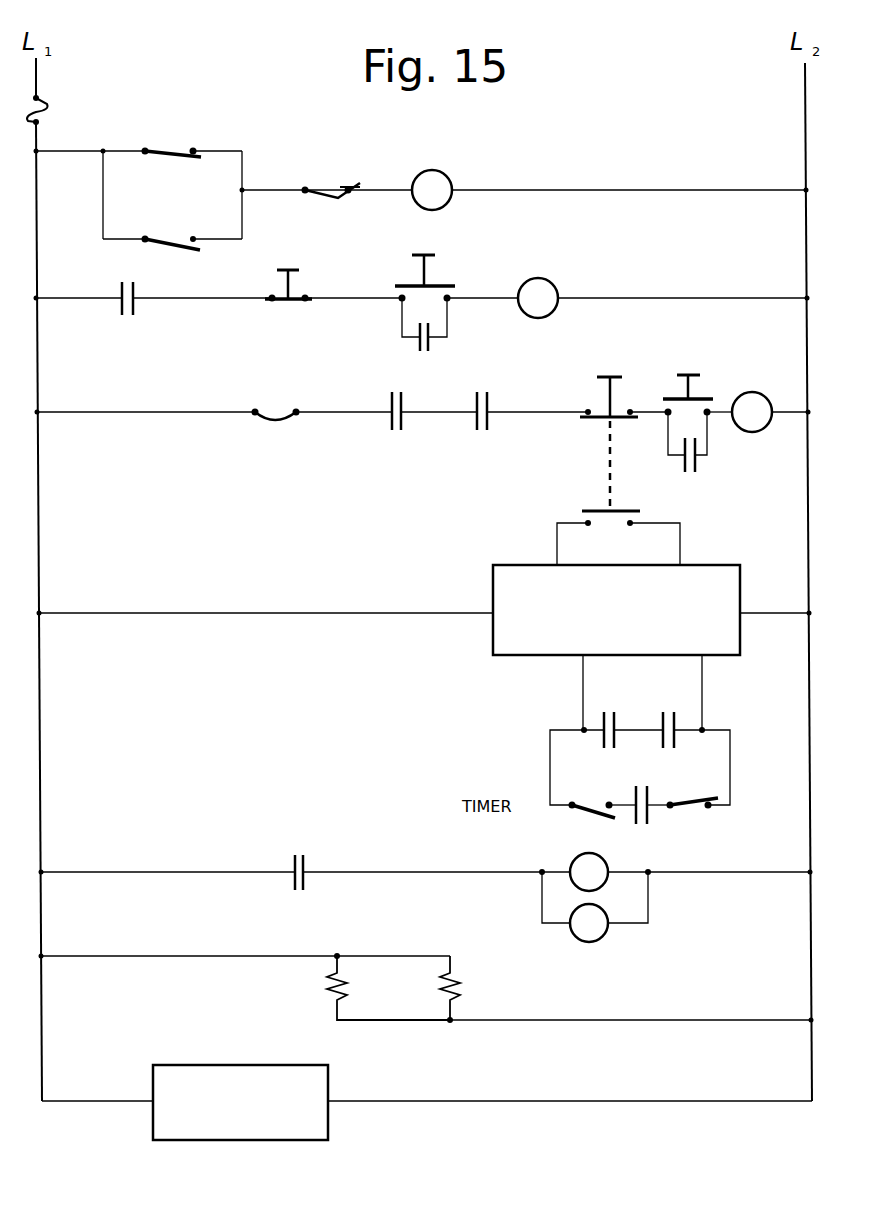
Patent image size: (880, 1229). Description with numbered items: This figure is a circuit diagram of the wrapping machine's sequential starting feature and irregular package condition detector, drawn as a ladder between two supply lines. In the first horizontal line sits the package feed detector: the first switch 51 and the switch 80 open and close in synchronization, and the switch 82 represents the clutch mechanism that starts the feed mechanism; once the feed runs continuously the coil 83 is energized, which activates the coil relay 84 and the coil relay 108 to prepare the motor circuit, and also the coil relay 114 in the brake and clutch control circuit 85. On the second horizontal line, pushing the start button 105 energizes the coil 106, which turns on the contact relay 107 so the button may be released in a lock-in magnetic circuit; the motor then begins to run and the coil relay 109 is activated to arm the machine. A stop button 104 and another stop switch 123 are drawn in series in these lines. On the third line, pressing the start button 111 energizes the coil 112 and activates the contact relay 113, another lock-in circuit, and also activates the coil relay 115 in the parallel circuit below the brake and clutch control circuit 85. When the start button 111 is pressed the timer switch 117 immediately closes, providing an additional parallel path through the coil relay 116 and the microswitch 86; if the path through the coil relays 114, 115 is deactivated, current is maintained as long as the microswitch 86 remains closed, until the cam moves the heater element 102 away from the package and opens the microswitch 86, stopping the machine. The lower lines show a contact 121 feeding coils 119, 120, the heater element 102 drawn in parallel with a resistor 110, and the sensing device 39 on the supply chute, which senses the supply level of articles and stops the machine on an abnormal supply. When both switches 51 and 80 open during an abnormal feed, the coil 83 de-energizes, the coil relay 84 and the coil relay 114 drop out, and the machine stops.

The stop switch 123 is at (48, 104).
The first switch 51 is at (172, 148).
The switch 80 is at (166, 237).
The switch 82 is at (327, 185).
The coil 83 is at (448, 178).
The coil relay 84 is at (118, 308).
The stop push button 104 is at (287, 304).
The start button 105 is at (414, 284).
The coil 106 is at (535, 278).
The contact relay 107 is at (431, 343).
The coil relay 108 is at (389, 425).
The coil or contact relay 109 is at (475, 425).
The start button 111 is at (700, 384).
The coil 112 is at (752, 434).
The contact or coil relay 113 is at (698, 470).
The brake and clutch control circuit 85 is at (515, 657).
The coil relay 114 is at (603, 745).
The coil relay 115 is at (678, 745).
The coil relay 116 is at (650, 815).
The timer switch 117 is at (592, 818).
The microswitch 86 is at (692, 808).
The relay coil 119 is at (573, 858).
The relay coil 120 is at (592, 942).
The contact 121 is at (314, 836).
The heater element 102 is at (320, 986).
The resistor 110 is at (462, 980).
The sensing device 39 is at (304, 1141).